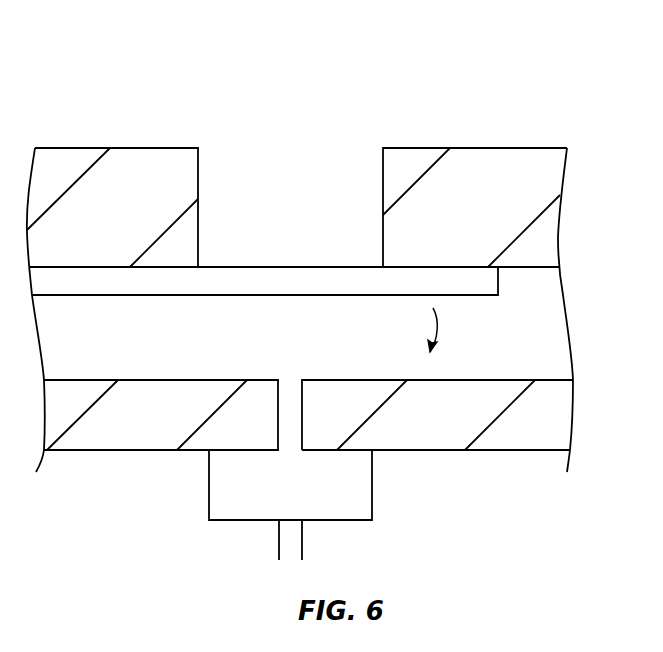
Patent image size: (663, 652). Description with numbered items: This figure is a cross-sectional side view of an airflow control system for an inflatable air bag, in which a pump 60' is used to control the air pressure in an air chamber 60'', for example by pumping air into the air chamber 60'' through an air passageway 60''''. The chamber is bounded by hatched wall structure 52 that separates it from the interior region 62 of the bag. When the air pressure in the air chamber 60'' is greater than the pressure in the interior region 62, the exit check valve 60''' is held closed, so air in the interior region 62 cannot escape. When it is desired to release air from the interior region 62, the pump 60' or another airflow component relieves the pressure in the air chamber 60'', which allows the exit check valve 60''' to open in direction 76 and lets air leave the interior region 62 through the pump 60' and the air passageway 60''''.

The housing wall 52 is at (540, 177).
The pump 60' is at (328, 485).
The air chamber 60'' is at (571, 294).
The exit check valve 60''' is at (264, 249).
The air passageway 60'''' is at (338, 540).
The interior region 62 is at (400, 73).
The direction 76 is at (440, 337).